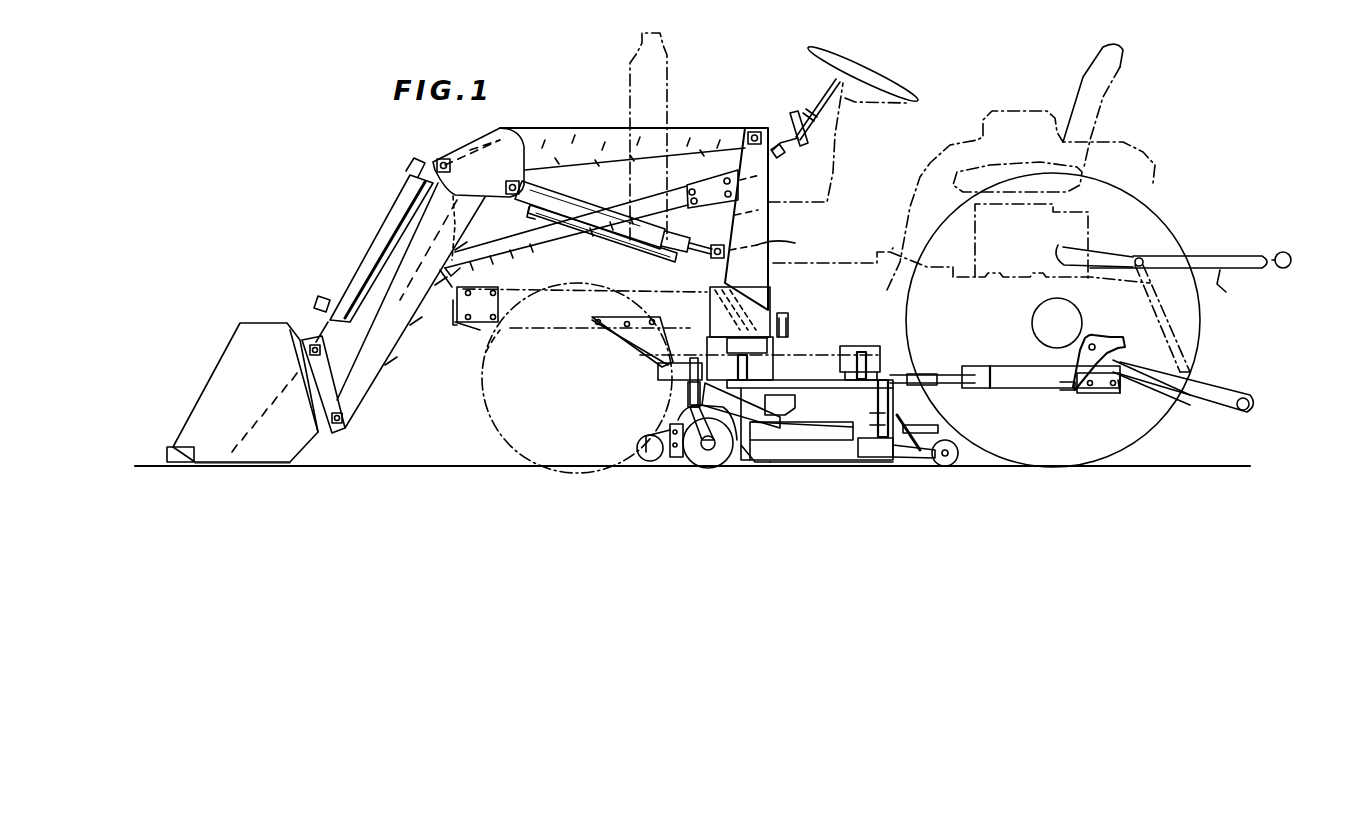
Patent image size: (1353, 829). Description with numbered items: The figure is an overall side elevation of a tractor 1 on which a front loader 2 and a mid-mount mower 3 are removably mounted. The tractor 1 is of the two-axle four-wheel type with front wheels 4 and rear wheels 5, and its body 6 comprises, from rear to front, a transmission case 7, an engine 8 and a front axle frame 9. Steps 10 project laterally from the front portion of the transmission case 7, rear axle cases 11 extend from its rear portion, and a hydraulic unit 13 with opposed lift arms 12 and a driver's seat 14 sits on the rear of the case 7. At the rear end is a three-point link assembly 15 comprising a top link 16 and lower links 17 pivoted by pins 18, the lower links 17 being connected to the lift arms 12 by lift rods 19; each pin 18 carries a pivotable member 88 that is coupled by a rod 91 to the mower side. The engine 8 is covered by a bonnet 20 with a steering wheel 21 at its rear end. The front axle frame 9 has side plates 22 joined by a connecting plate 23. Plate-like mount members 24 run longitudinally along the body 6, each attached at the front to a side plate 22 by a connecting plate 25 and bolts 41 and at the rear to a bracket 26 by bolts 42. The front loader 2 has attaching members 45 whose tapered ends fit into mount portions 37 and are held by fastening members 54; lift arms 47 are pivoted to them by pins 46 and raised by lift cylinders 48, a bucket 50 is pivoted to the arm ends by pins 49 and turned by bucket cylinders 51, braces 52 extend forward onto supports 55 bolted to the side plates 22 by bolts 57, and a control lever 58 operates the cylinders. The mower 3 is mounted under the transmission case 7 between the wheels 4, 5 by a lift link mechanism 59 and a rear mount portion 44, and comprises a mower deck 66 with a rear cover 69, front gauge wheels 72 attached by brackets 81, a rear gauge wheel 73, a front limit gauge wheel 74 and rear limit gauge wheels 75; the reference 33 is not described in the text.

The tractor 1 is at (851, 250).
The front loader 2 is at (352, 253).
The mower 3 is at (853, 470).
The front wheels 4 is at (486, 452).
The rear wheels 5 is at (1157, 437).
The tractor body 6 is at (990, 392).
The transmission case 7 is at (975, 240).
The engine 8 is at (650, 372).
The front axle frame 9 is at (476, 333).
The steps 10 is at (893, 283).
The rear axle cases 11 is at (1032, 313).
The lift arms 12 is at (1100, 250).
The hydraulic unit 13 is at (1123, 192).
The driver's seat 14 is at (1100, 96).
The three-point link assembly 15 is at (1236, 252).
The top link 16 is at (1228, 292).
The lower links 17 is at (1225, 380).
The pins 18 is at (1095, 338).
The lift rods 19 is at (1180, 333).
The bonnet 20 is at (597, 127).
The steering wheel 21 is at (893, 78).
The side plates 22 is at (490, 355).
The connecting plate 23 is at (452, 305).
The mount members 24 is at (1010, 400).
The connecting plate 25 is at (630, 347).
The bracket 26 is at (1168, 393).
The frame rail 33 is at (705, 300).
The mount portions 37 is at (775, 297).
The bolts 41 is at (598, 325).
The bolts 42 is at (1120, 395).
The rear mount portion 44 is at (861, 350).
The attaching members 45 is at (795, 243).
The pins 46 is at (770, 120).
The lift arms 47 is at (657, 140).
The lift cylinders 48 is at (590, 210).
The pins 49 is at (340, 437).
The bucket 50 is at (296, 435).
The bucket cylinders 51 is at (403, 210).
The braces 52 is at (575, 237).
The fastening members 54 is at (788, 325).
The supports 55 is at (492, 252).
The bolts 57 is at (492, 322).
The control lever 58 is at (840, 80).
The lift link mechanism 59 is at (898, 405).
The mower deck 66 is at (770, 446).
The cover 69 is at (810, 447).
The front cutting height adjusting gauge wheels 72 is at (710, 468).
The rear cutting height adjusting gauge wheel 73 is at (947, 470).
The front limit gauge wheel 74 is at (654, 466).
The rear limit gauge wheels 75 is at (915, 462).
The brackets 81 is at (748, 448).
The pivotable member 88 is at (1082, 395).
The rod 91 is at (1048, 398).